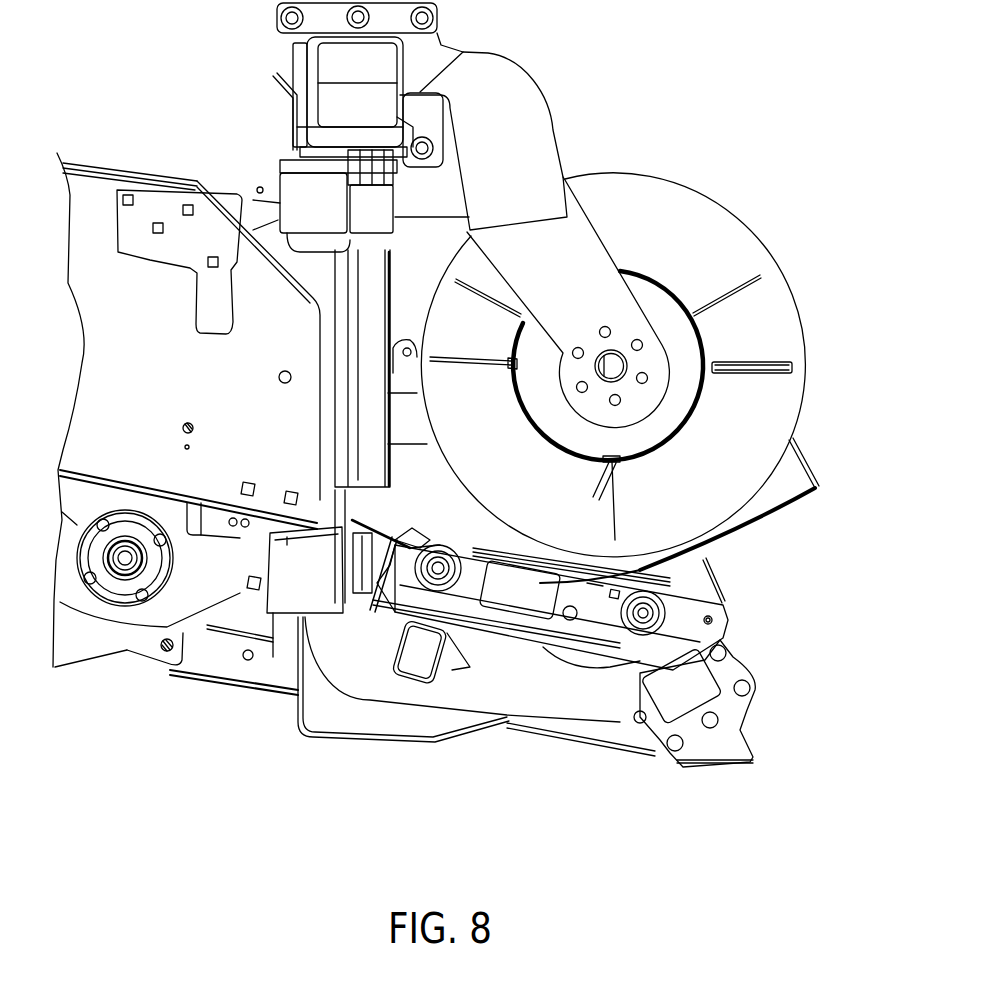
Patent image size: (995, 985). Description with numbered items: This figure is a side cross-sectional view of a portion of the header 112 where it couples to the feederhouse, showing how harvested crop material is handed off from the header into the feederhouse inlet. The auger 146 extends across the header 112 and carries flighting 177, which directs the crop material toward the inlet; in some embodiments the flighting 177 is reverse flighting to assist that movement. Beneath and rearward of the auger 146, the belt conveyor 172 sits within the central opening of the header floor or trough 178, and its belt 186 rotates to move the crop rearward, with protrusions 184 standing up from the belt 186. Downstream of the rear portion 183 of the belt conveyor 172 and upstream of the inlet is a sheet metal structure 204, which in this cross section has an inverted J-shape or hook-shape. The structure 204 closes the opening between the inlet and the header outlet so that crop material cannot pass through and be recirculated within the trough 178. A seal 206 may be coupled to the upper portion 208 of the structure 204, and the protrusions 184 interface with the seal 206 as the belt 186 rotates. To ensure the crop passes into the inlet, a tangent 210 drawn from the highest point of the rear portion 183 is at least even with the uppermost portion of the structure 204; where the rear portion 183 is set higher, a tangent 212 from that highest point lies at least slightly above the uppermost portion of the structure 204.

The header 112 is at (540, 48).
The auger 146 is at (618, 356).
The flighting 177 is at (665, 179).
The belt conveyor 172 is at (594, 655).
The trough 178 is at (748, 650).
The rear portion 183 is at (422, 596).
The protrusions 184 is at (503, 545).
The belt 186 is at (647, 592).
The structure 204 is at (357, 518).
The seal 206 is at (410, 510).
The upper portion 208 is at (392, 540).
The tangent 210 is at (440, 530).
The tangent 212 is at (405, 538).